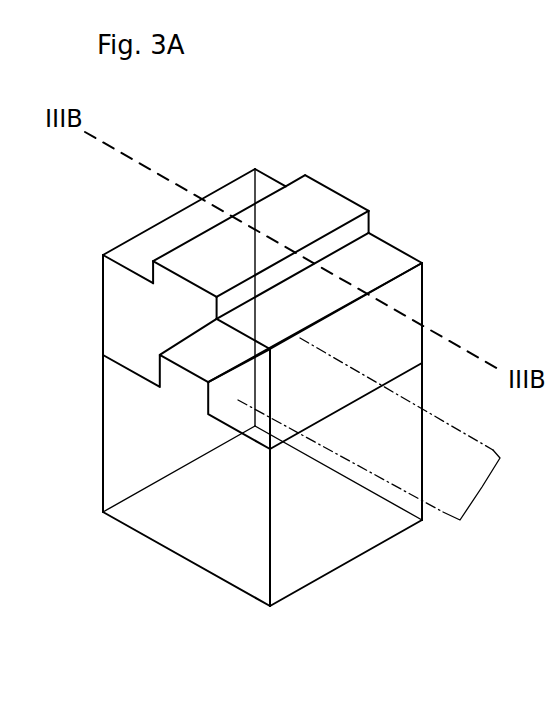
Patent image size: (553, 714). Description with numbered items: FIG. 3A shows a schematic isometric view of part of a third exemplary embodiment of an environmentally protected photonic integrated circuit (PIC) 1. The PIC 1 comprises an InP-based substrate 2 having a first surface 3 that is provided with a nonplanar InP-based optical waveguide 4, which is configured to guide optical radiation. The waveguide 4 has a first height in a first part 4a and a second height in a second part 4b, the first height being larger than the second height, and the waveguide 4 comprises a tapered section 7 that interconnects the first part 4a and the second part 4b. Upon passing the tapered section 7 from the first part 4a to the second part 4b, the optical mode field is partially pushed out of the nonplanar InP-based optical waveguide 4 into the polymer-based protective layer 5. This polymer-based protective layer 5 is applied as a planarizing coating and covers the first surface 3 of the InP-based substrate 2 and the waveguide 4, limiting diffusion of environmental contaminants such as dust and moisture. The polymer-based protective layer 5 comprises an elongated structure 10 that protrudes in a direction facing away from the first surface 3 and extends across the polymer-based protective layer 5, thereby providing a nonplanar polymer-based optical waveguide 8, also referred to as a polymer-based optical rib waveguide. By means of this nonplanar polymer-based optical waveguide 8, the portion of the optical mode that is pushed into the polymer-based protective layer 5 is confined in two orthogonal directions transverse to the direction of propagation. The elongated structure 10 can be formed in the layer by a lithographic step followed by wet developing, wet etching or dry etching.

The photonic integrated circuit 1 is at (357, 113).
The InP-based substrate 2 is at (329, 543).
The first surface 3 is at (126, 357).
The nonplanar InP-based optical waveguide 4 is at (168, 344).
The first part 4a is at (218, 395).
The second part 4b is at (318, 326).
The polymer-based protective layer 5 is at (405, 297).
The tapered section 7 is at (482, 487).
The nonplanar polymer-based optical waveguide 8 is at (287, 172).
The elongated structure 10 is at (360, 222).